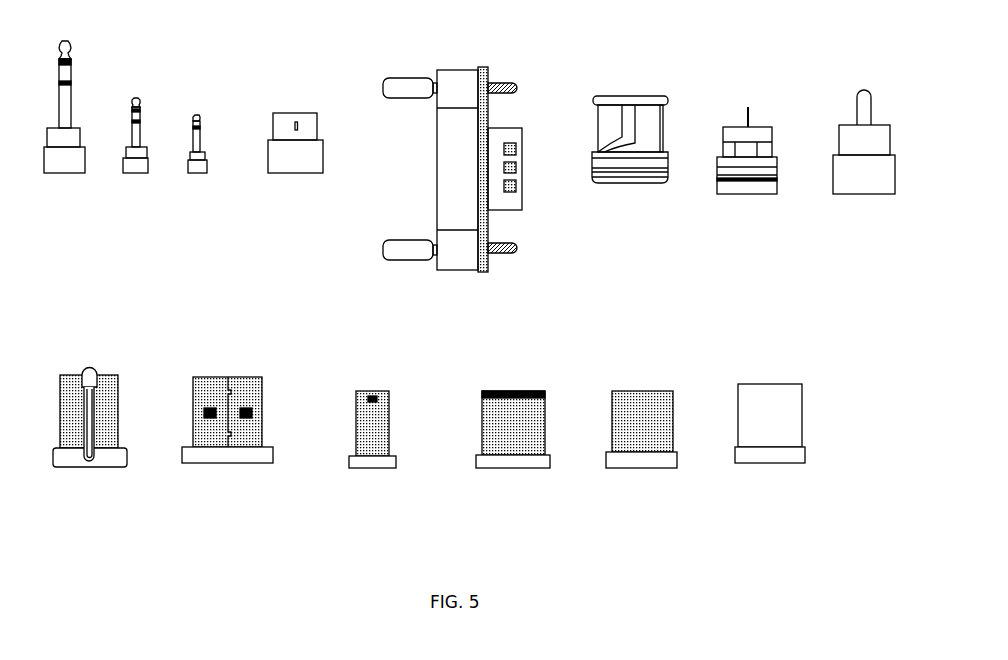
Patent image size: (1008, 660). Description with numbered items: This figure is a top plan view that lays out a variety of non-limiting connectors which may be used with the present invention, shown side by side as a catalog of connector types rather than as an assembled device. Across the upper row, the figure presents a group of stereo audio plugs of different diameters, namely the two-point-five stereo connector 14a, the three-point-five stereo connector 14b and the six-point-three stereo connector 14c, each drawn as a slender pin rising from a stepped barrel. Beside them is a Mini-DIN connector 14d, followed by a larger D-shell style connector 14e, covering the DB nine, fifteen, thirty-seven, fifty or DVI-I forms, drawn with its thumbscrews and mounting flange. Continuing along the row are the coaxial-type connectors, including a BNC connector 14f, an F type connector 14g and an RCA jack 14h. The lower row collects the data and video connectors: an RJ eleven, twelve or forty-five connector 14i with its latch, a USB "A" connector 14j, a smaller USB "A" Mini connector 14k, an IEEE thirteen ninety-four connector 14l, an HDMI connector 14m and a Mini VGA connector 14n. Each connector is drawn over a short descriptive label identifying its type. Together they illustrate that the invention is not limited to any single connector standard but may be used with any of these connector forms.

The 2.5 stereo connector 14a is at (114, 131).
The 3.5 stereo connector 14b is at (138, 160).
The 6.3 stereo connector 14c is at (200, 168).
The Mini-DIN connector 14d is at (295, 167).
The DB9, 15, 37, 50 or DVI-I connector 14e is at (451, 196).
The BNC connector 14f is at (630, 170).
The F type connector 14g is at (747, 176).
The RCA jack 14h is at (864, 168).
The RJ11, 12 or 45 connector 14i is at (90, 447).
The USB "A" connector 14j is at (227, 449).
The USB "A" Mini connector 14k is at (372, 456).
The IEEE 1394 connector 14l is at (513, 456).
The HDMI connector 14m is at (641, 456).
The Mini VGA connector 14n is at (770, 453).